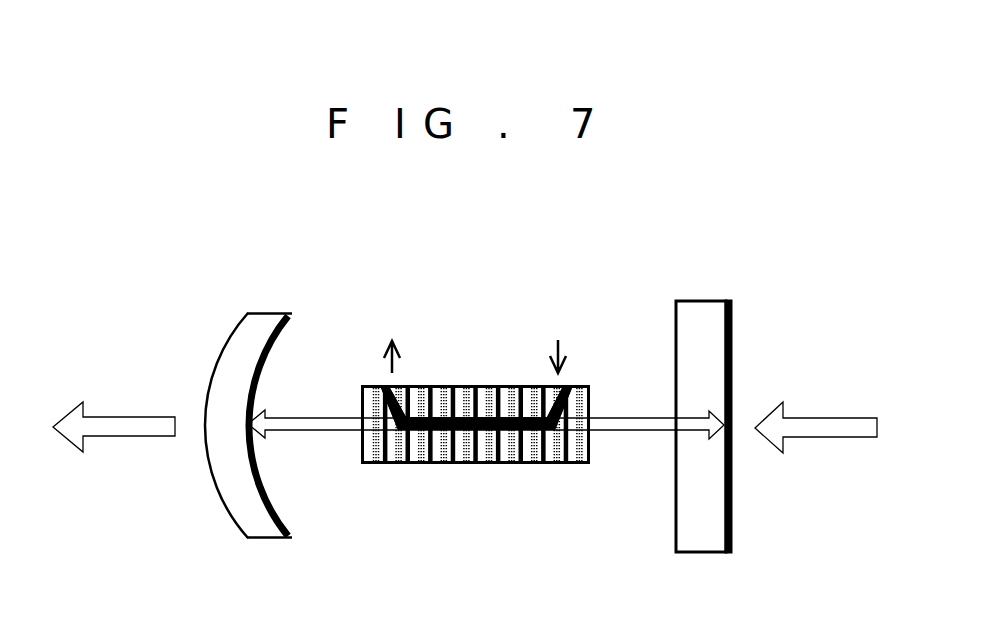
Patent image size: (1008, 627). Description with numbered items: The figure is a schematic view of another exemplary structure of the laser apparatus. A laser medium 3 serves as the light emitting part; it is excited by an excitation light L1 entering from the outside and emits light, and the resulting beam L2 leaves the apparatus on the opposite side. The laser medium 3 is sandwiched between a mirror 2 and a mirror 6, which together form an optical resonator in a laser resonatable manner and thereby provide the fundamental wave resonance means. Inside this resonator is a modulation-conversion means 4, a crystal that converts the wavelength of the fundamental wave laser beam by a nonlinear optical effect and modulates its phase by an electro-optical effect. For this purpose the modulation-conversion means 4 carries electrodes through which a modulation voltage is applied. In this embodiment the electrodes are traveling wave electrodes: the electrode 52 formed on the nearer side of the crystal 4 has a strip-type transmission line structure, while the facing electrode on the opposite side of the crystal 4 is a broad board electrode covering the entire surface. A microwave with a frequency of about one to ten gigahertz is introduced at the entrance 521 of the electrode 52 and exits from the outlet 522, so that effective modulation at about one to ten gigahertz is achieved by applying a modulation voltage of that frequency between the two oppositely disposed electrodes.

The mirror 2 is at (733, 373).
The laser medium 3 is at (703, 318).
The modulation-conversion means 4 is at (460, 463).
The electrode 52 is at (483, 420).
The entrance 521 is at (566, 391).
The outlet 522 is at (372, 387).
The mirror 6 is at (228, 350).
The excitation light L1 is at (845, 422).
The output laser light L2 is at (118, 418).